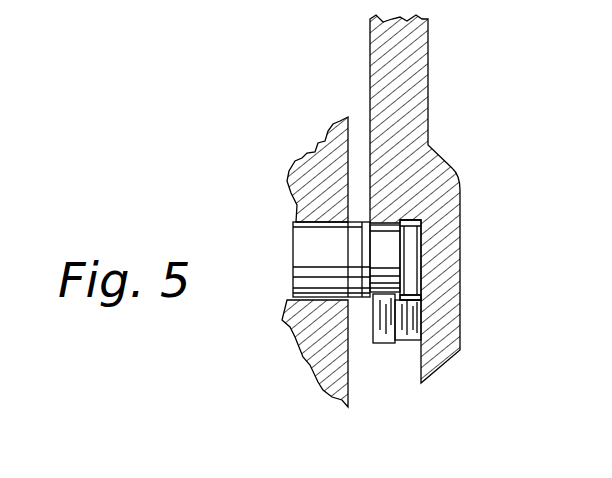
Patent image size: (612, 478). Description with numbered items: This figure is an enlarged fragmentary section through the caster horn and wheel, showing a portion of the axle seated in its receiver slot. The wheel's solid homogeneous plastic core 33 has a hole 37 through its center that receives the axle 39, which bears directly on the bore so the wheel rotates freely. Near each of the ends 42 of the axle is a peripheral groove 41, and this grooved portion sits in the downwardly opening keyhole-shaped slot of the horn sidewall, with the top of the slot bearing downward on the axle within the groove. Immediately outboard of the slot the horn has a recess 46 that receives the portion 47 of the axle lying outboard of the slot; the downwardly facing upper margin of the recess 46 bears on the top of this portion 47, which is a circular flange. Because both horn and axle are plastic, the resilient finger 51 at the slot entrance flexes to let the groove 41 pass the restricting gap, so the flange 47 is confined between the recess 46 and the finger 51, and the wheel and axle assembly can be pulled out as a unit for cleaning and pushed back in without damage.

The plastic core 33 is at (343, 370).
The hole 37 is at (330, 226).
The axle 39 is at (358, 224).
The peripheral groove 41 is at (393, 245).
The ends of the axle 42 is at (421, 262).
The recess 46 is at (410, 218).
The portion of the axle outboard of the slot 47 is at (419, 293).
The finger 51 is at (382, 333).